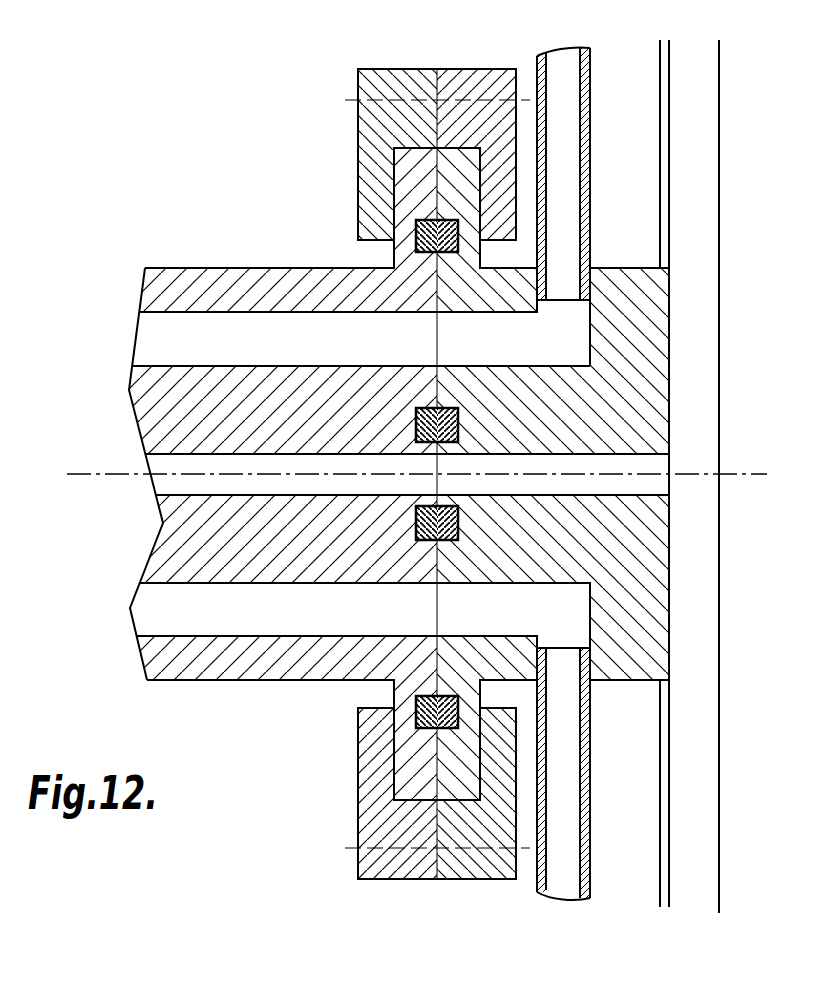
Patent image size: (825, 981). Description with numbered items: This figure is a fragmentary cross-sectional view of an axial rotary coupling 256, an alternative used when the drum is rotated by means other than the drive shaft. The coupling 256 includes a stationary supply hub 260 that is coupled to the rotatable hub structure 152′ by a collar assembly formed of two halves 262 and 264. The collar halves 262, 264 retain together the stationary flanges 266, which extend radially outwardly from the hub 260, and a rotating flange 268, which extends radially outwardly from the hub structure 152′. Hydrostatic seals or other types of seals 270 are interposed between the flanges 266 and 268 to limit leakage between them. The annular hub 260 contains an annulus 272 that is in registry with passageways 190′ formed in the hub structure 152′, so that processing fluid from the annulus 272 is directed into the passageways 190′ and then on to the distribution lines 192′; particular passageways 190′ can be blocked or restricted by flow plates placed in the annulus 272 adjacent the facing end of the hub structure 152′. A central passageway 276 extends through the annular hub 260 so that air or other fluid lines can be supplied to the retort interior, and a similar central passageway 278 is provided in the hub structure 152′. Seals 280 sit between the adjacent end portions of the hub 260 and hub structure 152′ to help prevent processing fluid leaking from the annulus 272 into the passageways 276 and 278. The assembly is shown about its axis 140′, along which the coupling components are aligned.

The axial rotary coupling 256 is at (200, 140).
The stationary supply hub 260 is at (200, 268).
The collar assembly half 262 is at (375, 88).
The collar assembly half 264 is at (510, 92).
The stationary flange 266 is at (402, 170).
The rotating flange 268 is at (473, 173).
The seal 270 is at (417, 227).
The annulus 272 is at (147, 340).
The central passageway 276 is at (157, 463).
The central passageway 278 is at (663, 472).
The seal 280 is at (417, 540).
The passageway 190′ is at (532, 337).
The axis 140′ is at (745, 477).
The hub structure 152′ is at (638, 678).
The distribution line 192′ is at (583, 797).